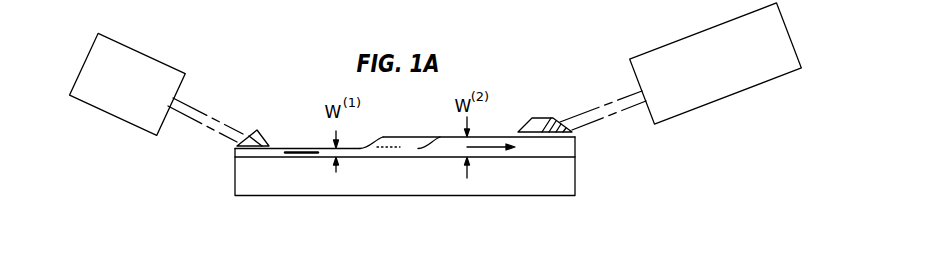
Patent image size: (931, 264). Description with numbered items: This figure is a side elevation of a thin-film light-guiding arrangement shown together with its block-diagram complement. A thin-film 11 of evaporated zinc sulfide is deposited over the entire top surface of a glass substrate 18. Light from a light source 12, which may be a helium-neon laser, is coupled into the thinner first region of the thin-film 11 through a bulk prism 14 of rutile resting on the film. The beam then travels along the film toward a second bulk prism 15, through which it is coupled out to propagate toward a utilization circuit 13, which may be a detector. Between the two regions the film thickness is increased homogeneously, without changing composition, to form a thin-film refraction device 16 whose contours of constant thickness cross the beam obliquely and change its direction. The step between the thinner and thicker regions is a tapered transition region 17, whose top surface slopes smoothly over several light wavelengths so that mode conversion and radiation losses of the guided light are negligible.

The thin-film 11 is at (293, 147).
The light source 12 is at (113, 115).
The utilization circuit 13 is at (730, 97).
The bulk prism 14 is at (267, 128).
The bulk prism 15 is at (543, 117).
The thin-film refraction device 16 is at (502, 135).
The transition region 17 is at (375, 138).
The substrate 18 is at (571, 182).